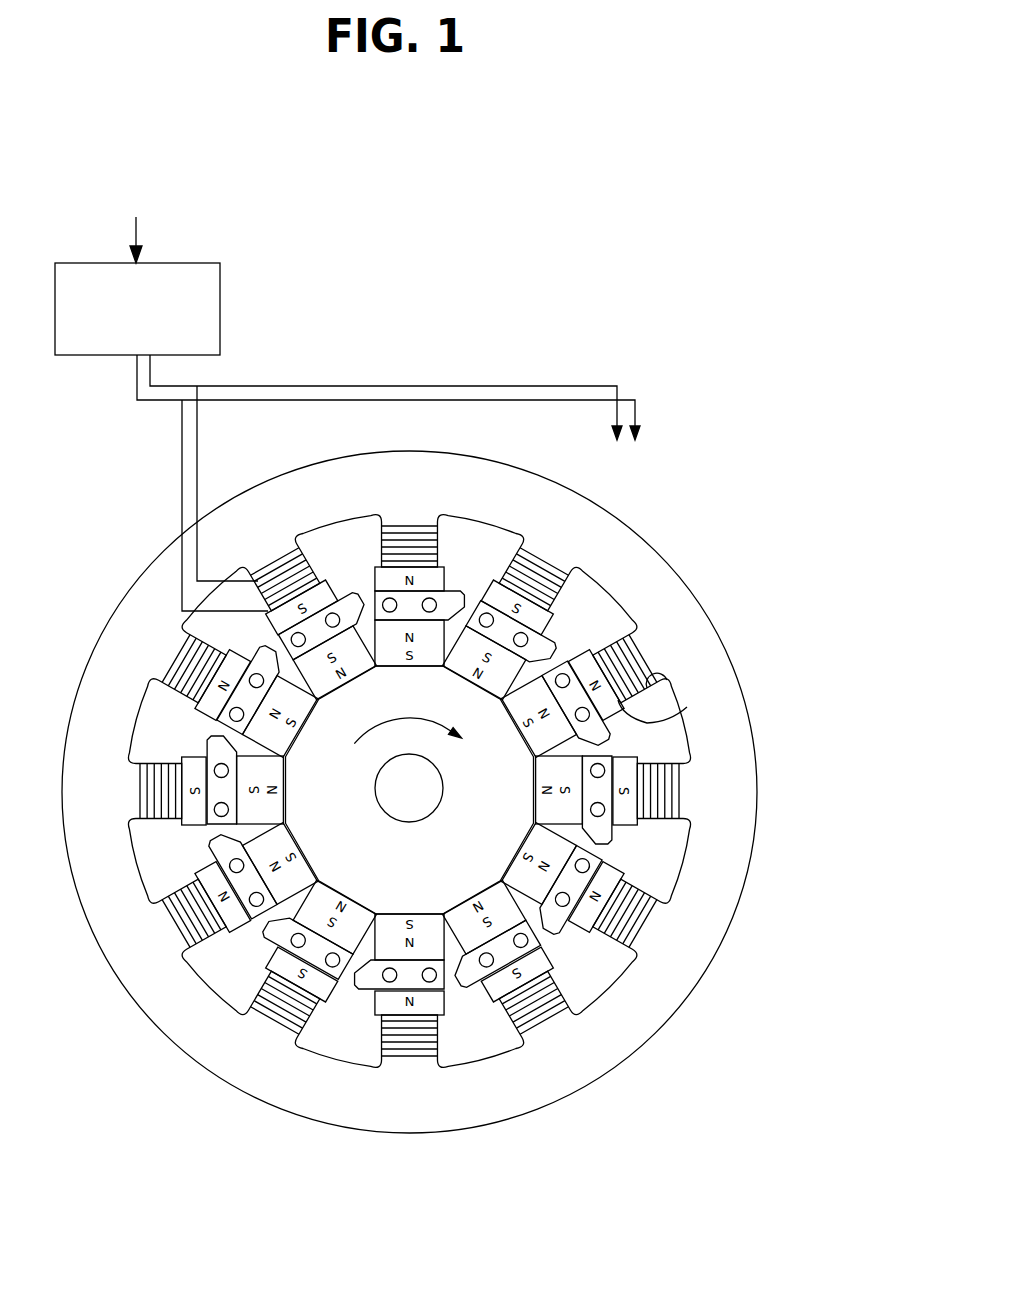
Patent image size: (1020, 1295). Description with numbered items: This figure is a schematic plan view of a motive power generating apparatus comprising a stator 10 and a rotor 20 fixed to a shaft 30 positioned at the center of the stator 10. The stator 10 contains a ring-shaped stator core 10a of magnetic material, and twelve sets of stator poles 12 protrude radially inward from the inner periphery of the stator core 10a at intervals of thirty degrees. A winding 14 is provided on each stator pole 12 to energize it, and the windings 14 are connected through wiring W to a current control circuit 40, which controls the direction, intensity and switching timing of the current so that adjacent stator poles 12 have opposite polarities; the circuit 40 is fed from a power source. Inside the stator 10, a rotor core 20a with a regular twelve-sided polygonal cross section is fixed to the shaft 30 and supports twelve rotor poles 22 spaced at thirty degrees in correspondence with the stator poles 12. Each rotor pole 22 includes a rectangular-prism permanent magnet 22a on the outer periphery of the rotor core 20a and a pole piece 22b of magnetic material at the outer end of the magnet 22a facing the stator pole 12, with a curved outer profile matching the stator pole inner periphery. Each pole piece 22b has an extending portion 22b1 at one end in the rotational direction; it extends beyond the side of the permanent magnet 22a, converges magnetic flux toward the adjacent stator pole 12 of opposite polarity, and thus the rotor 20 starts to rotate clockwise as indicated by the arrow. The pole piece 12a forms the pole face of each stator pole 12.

The stator 10 is at (680, 567).
The stator core 10a is at (673, 607).
The stator pole 12 is at (826, 580).
The pole piece 12a is at (660, 713).
The winding 14 is at (662, 676).
The rotor 20 is at (500, 780).
The rotor core 20a is at (523, 790).
The rotor pole 22 is at (858, 830).
The permanent magnet 22a is at (557, 853).
The pole piece 22b is at (587, 860).
The extending portion 22b1 is at (612, 963).
The shaft 30 is at (427, 803).
The current control circuit 40 is at (213, 291).
The wiring W is at (312, 393).